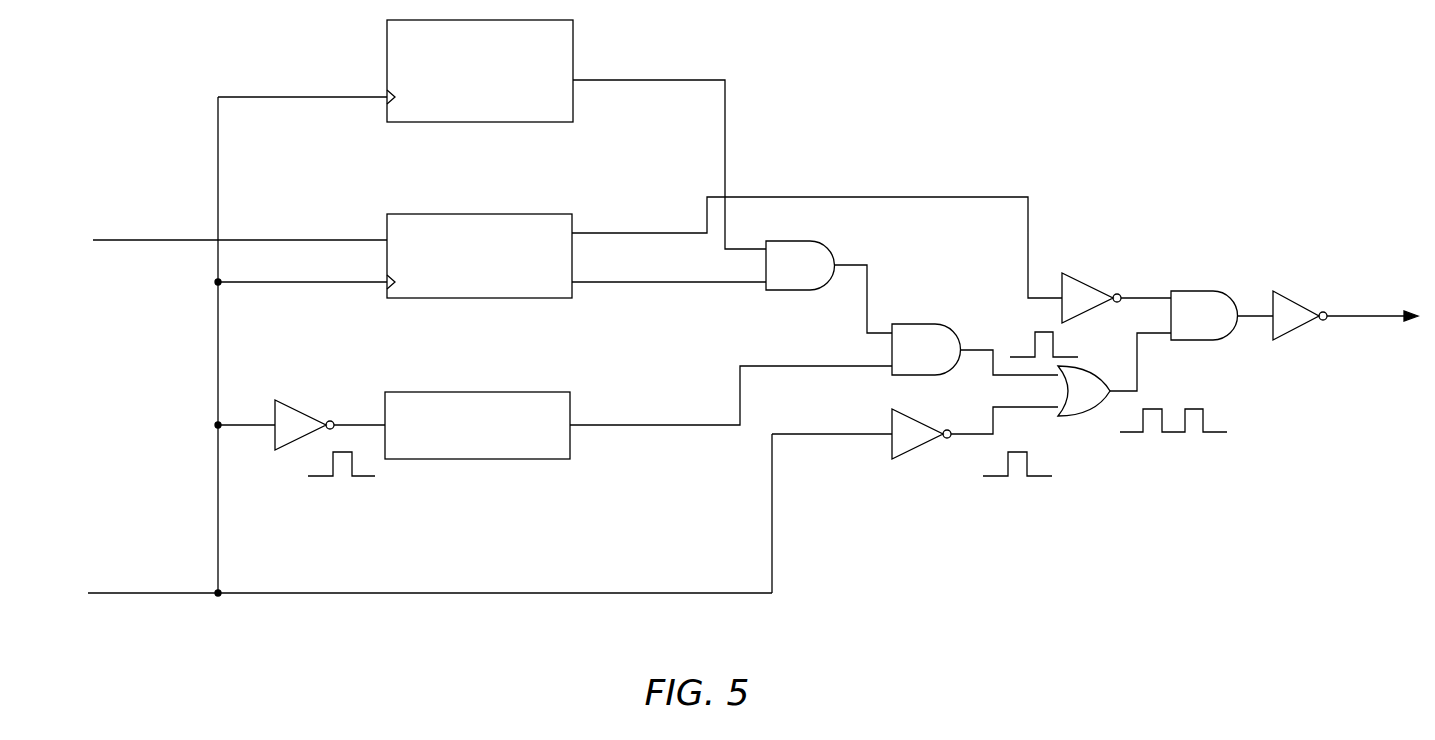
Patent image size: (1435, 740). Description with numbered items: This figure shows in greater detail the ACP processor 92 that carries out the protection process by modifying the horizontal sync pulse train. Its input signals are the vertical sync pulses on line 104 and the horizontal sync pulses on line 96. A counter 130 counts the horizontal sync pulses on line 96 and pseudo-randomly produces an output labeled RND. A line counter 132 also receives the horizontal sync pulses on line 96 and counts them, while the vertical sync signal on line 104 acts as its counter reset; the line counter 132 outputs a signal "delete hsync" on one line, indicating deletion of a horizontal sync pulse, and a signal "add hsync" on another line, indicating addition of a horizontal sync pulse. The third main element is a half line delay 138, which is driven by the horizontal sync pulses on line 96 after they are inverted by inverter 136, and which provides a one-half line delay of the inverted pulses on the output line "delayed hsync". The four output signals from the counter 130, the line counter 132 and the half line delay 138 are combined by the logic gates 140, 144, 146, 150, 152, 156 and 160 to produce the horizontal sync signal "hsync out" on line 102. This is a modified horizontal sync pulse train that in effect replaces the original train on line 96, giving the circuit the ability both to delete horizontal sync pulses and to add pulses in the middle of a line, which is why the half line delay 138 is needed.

The processor 92 is at (1048, 76).
The line 96 is at (141, 595).
The line 102 is at (1370, 318).
The line 104 is at (144, 242).
The counter 130 is at (556, 123).
The line counter 132 is at (556, 299).
The inverter 136 is at (296, 402).
The half line delay 138 is at (554, 460).
The logic gate 140 is at (828, 247).
The logic gate 144 is at (934, 324).
The logic gate 146 is at (915, 445).
The logic gate 150 is at (1080, 417).
The logic gate 152 is at (1085, 273).
The logic gate 156 is at (1213, 341).
The logic gate 160 is at (1290, 291).